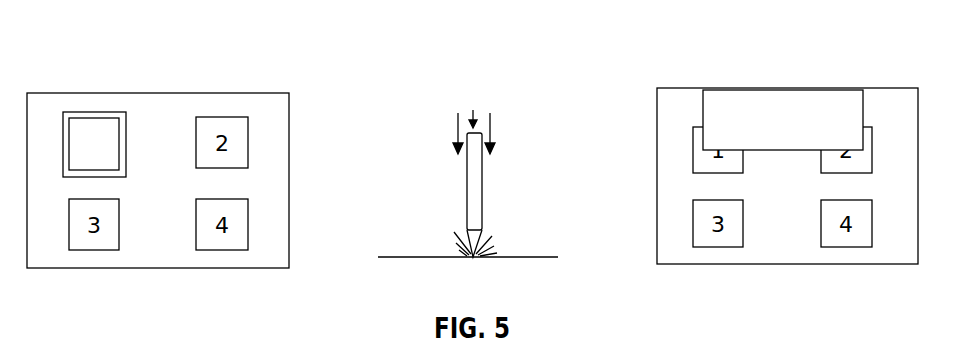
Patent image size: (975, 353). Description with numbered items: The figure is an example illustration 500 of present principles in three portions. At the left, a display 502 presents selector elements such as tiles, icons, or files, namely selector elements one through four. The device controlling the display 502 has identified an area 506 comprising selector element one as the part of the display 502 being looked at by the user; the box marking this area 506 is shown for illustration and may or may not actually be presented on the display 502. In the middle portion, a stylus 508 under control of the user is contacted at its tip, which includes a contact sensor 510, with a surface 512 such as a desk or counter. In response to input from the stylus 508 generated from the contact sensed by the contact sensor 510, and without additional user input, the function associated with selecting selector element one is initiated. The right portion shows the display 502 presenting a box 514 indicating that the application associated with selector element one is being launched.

The example illustration 500 is at (388, 68).
The display 502 is at (242, 93).
The area 506 is at (126, 135).
The stylus 508 is at (488, 181).
The contact sensor 510 is at (483, 240).
The surface 512 is at (427, 254).
The box 514 is at (863, 114).